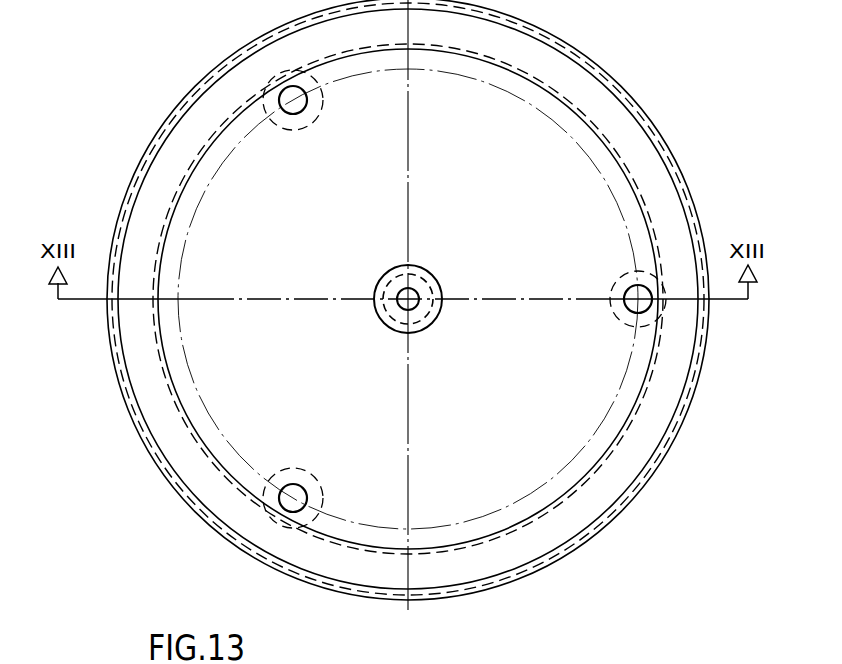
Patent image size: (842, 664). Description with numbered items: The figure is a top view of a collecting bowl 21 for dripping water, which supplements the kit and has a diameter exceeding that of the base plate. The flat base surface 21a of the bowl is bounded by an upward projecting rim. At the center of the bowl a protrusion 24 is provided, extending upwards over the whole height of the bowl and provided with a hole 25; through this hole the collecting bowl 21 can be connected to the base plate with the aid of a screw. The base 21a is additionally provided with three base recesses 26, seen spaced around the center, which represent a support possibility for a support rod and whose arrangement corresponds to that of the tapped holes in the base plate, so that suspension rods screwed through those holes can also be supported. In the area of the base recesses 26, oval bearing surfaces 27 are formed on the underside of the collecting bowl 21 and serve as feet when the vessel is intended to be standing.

The collecting bowl 21 is at (638, 96).
The base surface 21a is at (546, 225).
The protrusion 24 is at (440, 317).
The hole 25 is at (413, 293).
The base recesses 26 is at (292, 100).
The oval bearing surfaces 27 is at (321, 101).